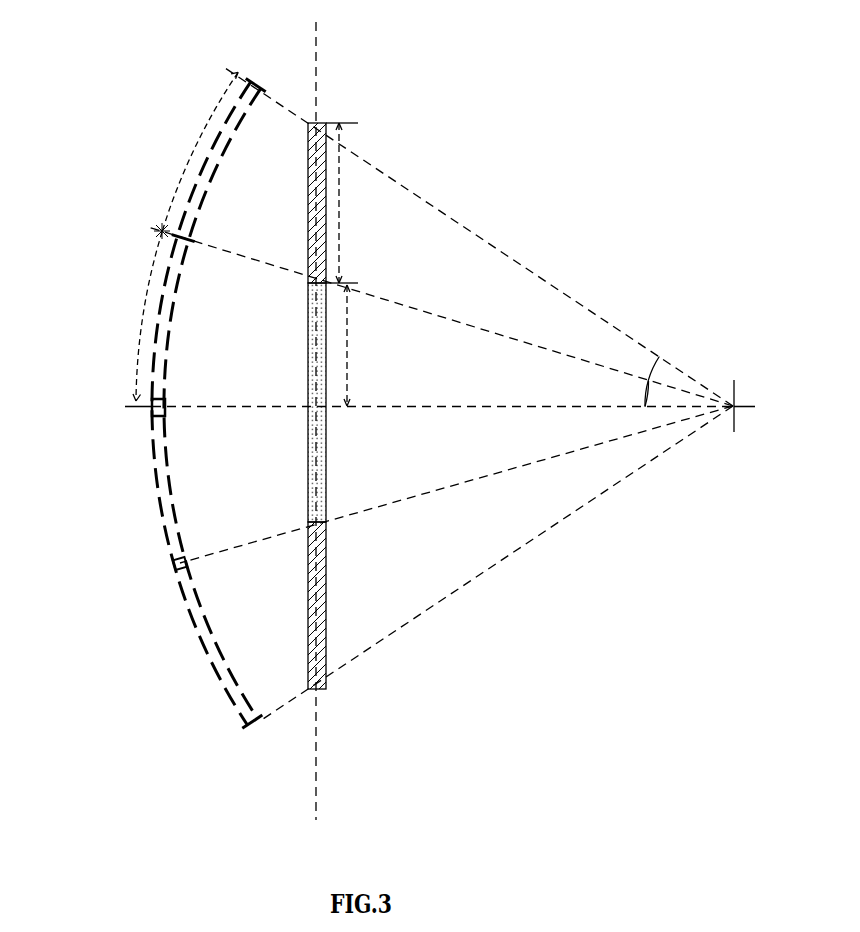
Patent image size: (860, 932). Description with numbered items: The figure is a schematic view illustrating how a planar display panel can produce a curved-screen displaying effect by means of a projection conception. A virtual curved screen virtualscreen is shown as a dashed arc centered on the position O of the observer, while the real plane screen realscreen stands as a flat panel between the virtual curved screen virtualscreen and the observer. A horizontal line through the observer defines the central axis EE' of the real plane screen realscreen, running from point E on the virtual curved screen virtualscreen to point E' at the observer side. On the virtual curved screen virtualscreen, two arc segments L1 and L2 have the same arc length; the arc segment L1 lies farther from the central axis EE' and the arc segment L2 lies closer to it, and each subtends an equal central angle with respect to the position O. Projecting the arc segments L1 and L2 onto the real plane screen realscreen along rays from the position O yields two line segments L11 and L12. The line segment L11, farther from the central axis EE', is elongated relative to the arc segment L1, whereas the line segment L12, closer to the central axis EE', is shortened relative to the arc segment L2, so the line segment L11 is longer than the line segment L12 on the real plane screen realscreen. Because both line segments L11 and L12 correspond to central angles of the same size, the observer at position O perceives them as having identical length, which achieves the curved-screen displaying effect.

The arc segment L1 is at (195, 151).
The arc segment L2 is at (144, 312).
The line segment L11 is at (361, 203).
The line segment L12 is at (366, 345).
The position of the observer O is at (737, 390).
The central axis end point E is at (129, 397).
The central axis end point E' is at (757, 399).
The real plane screen realscreen is at (315, 730).
The virtual curved screen virtualscreen is at (165, 512).